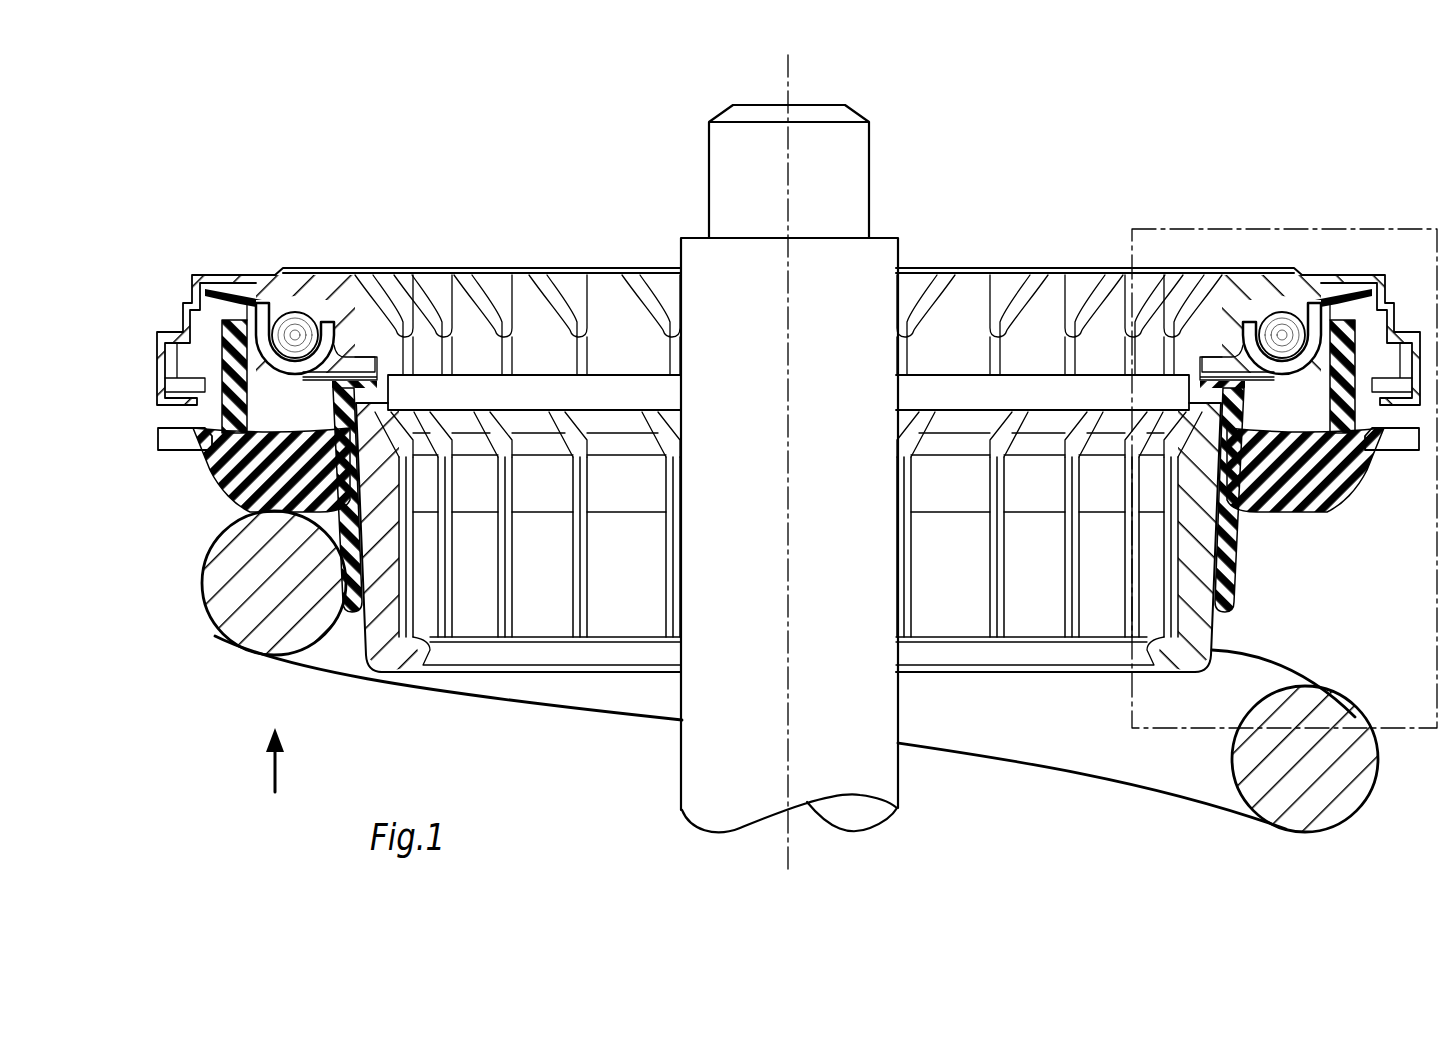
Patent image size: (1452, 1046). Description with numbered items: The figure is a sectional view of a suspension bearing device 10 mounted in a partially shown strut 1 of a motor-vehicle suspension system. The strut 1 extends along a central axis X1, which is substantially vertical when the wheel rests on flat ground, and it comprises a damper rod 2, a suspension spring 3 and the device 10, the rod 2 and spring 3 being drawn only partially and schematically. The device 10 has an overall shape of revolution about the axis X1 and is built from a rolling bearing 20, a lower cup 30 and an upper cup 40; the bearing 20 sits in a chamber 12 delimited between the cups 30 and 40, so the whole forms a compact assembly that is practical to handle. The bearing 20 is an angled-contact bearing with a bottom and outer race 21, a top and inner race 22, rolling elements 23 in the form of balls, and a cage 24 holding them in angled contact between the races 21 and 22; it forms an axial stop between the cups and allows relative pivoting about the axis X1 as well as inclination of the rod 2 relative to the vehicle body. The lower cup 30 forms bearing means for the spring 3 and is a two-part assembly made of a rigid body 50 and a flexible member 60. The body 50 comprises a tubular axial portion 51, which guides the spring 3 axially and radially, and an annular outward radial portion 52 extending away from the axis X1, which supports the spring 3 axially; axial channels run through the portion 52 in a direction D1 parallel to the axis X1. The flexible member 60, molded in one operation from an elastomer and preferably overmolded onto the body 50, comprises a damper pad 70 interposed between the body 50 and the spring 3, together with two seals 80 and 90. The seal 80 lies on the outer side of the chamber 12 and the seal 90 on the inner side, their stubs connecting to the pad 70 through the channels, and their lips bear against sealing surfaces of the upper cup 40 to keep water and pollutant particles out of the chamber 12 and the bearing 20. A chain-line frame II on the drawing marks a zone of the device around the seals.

The strut 1 is at (1300, 211).
The damper rod 2 is at (706, 779).
The suspension spring 3 is at (232, 622).
The suspension bearing device 10 is at (165, 248).
The chamber 12 is at (252, 293).
The rolling bearing 20 is at (324, 212).
The bottom and outer race 21 is at (268, 303).
The top and inner race 22 is at (352, 318).
The rolling elements 23 is at (297, 322).
The cage 24 is at (310, 323).
The lower cup 30 is at (200, 488).
The upper cup 40 is at (367, 316).
The body 50 is at (148, 416).
The tubular axial portion 51 is at (372, 638).
The annular outward radial portion 52 is at (166, 439).
The flexible member 60 is at (1365, 508).
The damper pad 70 is at (1312, 502).
The seal 80 is at (1344, 290).
The seal 90 is at (1228, 362).
The detail view area II is at (1130, 229).
The central axis X1 is at (801, 461).
The direction D1 is at (258, 760).